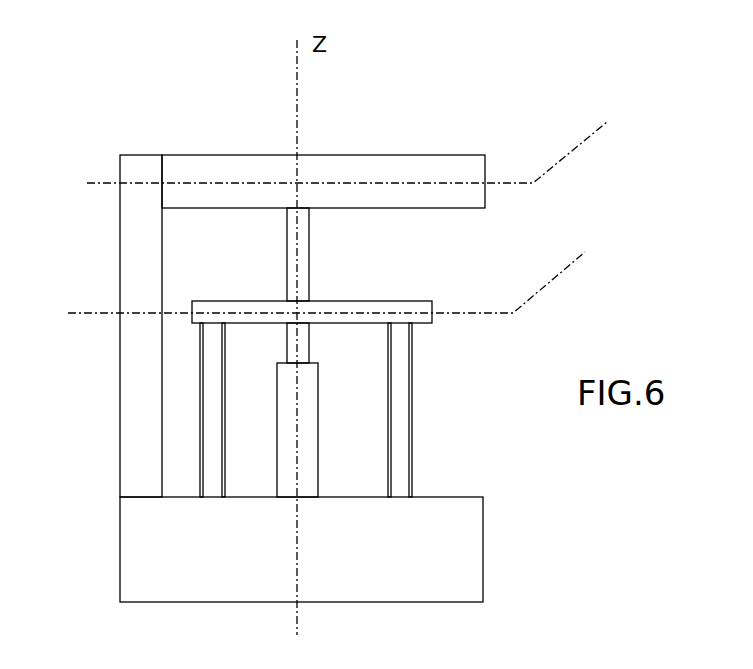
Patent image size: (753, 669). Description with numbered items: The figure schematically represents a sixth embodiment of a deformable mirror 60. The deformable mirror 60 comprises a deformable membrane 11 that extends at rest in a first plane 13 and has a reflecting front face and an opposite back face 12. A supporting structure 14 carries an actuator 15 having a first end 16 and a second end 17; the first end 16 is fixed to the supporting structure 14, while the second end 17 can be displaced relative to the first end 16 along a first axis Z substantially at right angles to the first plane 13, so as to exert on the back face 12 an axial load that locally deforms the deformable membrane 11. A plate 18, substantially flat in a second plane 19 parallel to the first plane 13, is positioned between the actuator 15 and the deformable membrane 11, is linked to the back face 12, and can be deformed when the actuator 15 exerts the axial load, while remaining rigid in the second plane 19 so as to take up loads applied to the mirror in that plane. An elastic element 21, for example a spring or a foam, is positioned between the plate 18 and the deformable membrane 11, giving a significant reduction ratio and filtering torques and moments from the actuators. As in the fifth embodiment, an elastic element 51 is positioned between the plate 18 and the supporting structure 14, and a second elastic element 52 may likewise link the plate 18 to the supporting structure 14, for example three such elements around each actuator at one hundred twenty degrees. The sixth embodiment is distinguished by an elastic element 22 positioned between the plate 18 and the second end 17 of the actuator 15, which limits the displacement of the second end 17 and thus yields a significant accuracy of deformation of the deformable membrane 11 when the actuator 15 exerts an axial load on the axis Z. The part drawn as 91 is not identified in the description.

The deformable mirror 60 is at (180, 60).
The deformable membrane 11 is at (285, 172).
The back face 12 is at (265, 207).
The first plane 13 is at (452, 127).
The supporting structure 14 is at (428, 550).
The actuator 15 is at (305, 447).
The first end 16 is at (313, 497).
The second end 17 is at (308, 363).
The plate 18 is at (338, 307).
The second plane 19 is at (507, 275).
The elastic element 21 is at (297, 278).
The elastic element 22 is at (305, 342).
The elastic element 51 is at (213, 388).
The second elastic element 52 is at (398, 425).
The column 91 is at (133, 156).